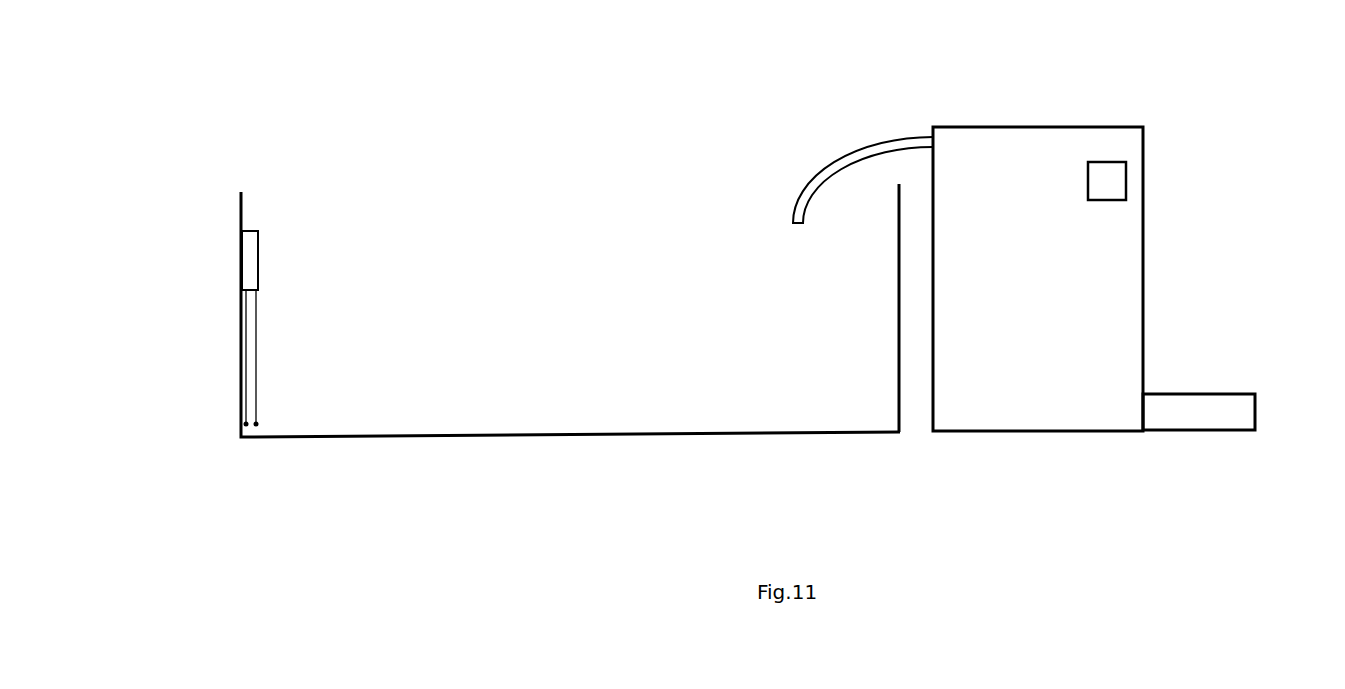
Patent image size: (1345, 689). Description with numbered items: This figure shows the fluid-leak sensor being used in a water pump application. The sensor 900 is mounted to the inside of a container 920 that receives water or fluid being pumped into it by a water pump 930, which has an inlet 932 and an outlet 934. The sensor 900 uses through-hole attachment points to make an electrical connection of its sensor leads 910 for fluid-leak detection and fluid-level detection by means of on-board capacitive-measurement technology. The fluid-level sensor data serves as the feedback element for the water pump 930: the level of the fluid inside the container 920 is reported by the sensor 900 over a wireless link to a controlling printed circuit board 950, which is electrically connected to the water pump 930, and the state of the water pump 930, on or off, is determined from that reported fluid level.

The sensor 900 is at (249, 252).
The wires 910 is at (269, 371).
The container 920 is at (432, 239).
The water pump 930 is at (1028, 153).
The inlet 932 is at (1193, 412).
The outlet 934 is at (880, 148).
The controlling printed circuit board (PCB) 950 is at (1098, 180).